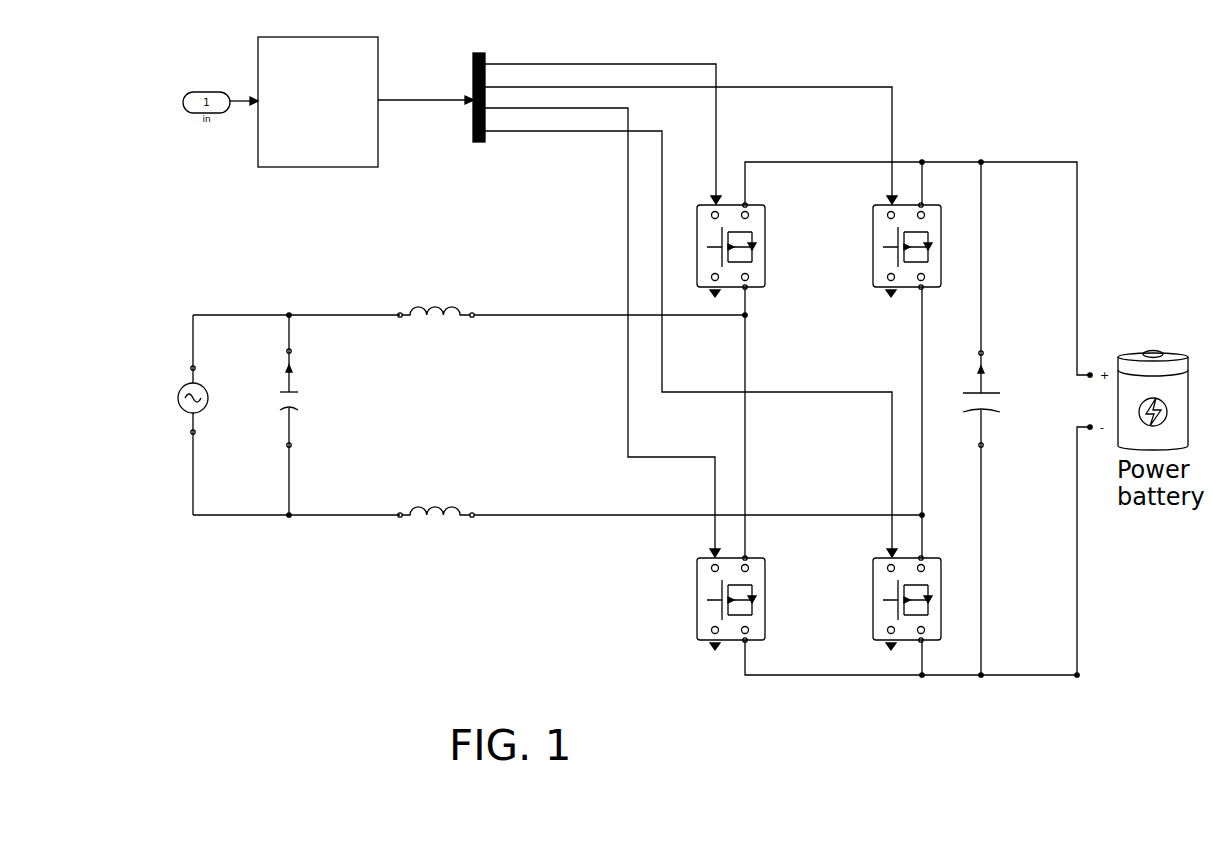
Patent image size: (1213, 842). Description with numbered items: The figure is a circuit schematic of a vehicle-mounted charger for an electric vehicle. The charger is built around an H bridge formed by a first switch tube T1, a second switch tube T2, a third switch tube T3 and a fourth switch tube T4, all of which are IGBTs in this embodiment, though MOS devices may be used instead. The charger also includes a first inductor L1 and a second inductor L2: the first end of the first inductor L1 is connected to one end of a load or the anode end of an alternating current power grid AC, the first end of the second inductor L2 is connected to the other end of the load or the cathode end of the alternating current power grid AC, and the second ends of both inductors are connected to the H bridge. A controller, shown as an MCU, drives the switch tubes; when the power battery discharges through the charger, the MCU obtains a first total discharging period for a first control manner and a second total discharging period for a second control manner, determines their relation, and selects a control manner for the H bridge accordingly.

The first switch tube T1 is at (740, 250).
The second switch tube T2 is at (740, 603).
The third switch tube T3 is at (916, 250).
The fourth switch tube T4 is at (916, 603).
The first inductor L1 is at (436, 333).
The second inductor L2 is at (436, 533).
The controller (Micro Control Unit) MCU is at (318, 113).
The alternating current power grid AC is at (175, 415).